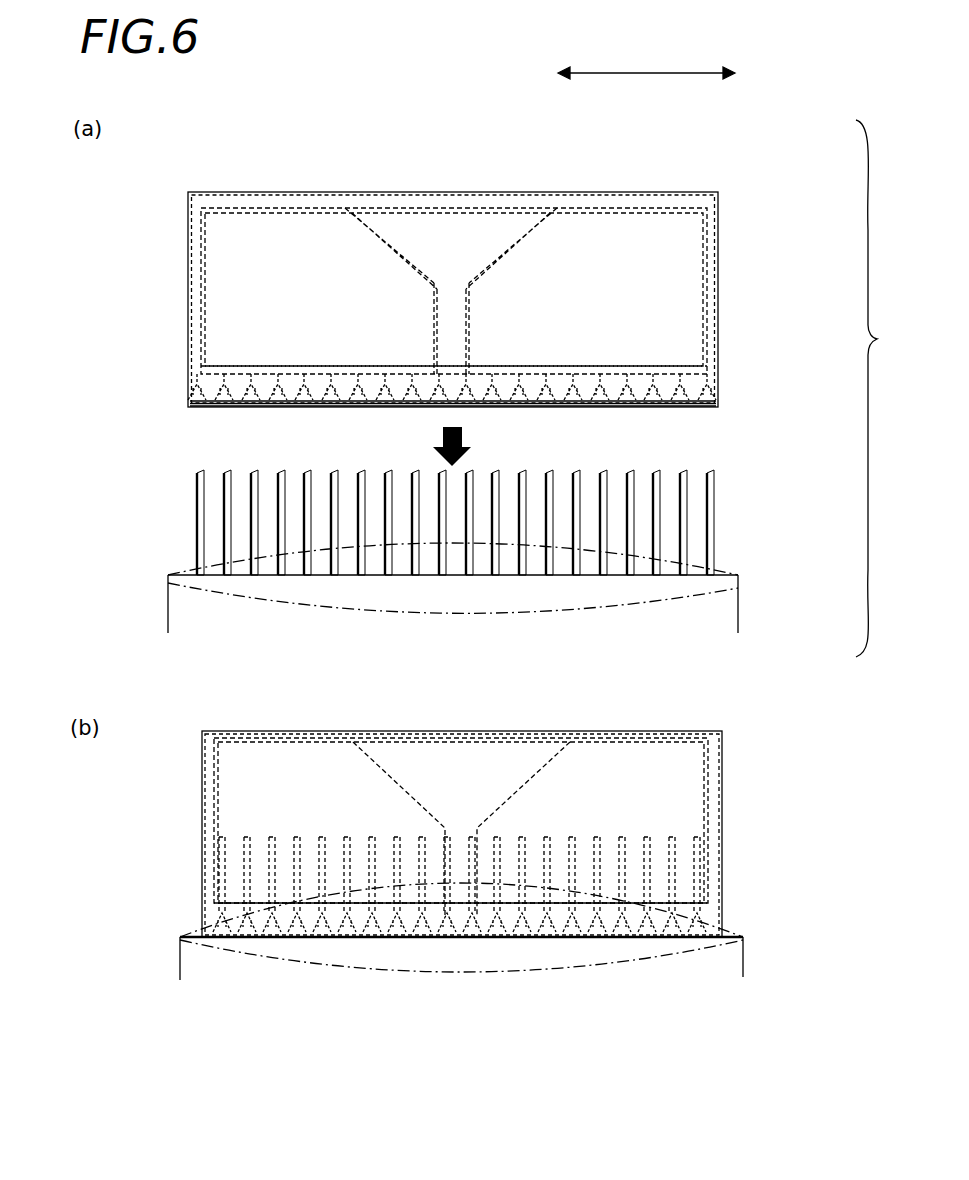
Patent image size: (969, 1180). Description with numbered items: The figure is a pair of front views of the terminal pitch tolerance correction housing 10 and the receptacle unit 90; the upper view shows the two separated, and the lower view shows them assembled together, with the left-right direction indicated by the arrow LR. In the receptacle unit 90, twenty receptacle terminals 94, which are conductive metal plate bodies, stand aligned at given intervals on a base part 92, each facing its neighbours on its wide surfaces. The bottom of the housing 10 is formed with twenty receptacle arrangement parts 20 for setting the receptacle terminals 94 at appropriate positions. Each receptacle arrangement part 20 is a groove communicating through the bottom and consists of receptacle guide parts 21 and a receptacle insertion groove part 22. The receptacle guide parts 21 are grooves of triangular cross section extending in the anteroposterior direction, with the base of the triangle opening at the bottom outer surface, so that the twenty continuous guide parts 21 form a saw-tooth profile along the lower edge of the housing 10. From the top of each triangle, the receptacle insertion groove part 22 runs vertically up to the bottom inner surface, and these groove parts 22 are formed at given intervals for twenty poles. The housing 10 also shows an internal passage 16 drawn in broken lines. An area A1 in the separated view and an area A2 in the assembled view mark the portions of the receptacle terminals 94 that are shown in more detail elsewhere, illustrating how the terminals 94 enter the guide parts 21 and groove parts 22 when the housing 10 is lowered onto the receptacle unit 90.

The terminal pitch tolerance correction housing 10 is at (718, 193).
The ink supply passage 16 is at (483, 268).
The receptacle arrangement part 20 is at (465, 616).
The receptacle guide part 21 is at (203, 396).
The receptacle insertion groove part 22 is at (292, 372).
The receptacle unit 90 is at (738, 625).
The base part 92 is at (738, 577).
The receptacle terminal 94 is at (198, 472).
The area A1 is at (188, 609).
The area A2 is at (230, 964).
The left-right direction LR is at (645, 75).